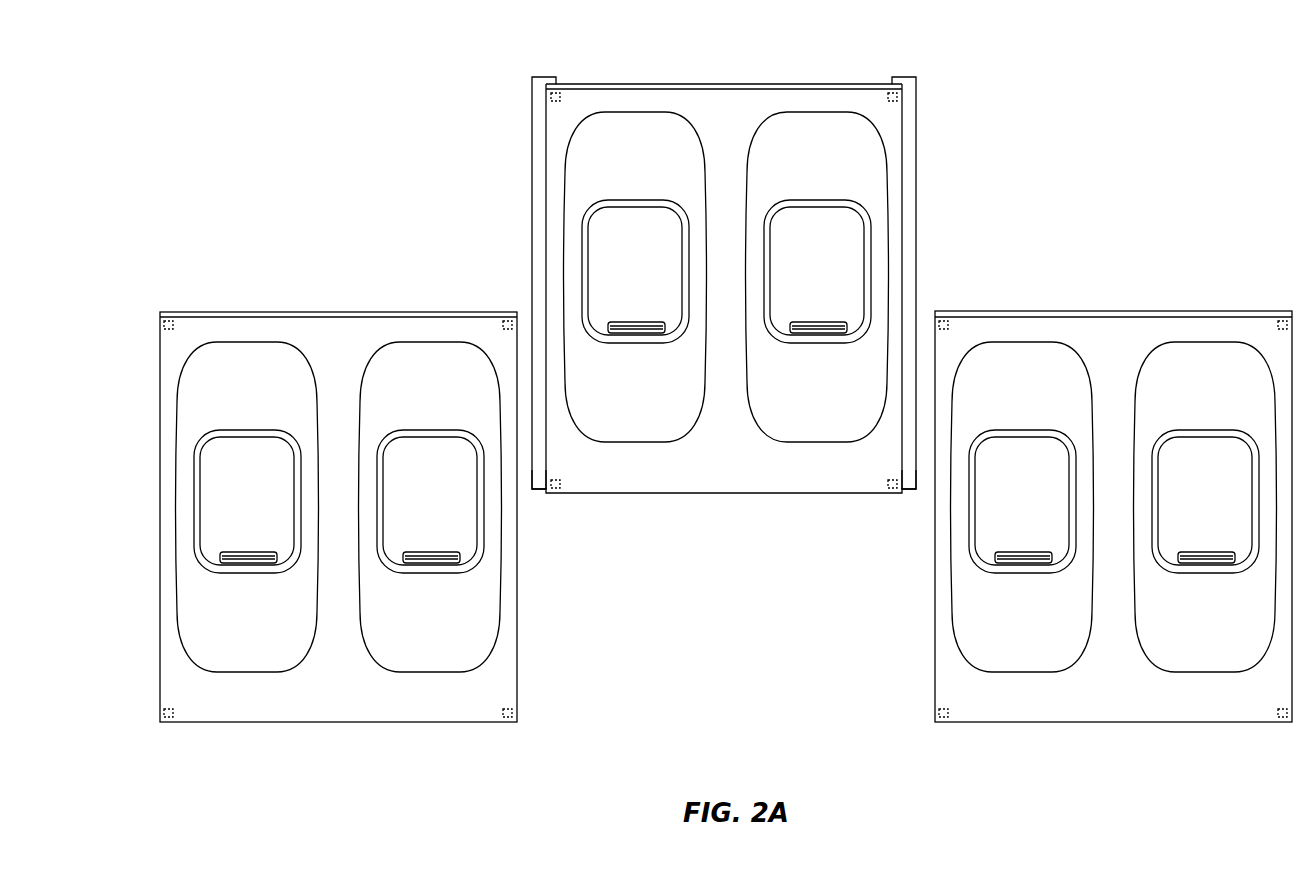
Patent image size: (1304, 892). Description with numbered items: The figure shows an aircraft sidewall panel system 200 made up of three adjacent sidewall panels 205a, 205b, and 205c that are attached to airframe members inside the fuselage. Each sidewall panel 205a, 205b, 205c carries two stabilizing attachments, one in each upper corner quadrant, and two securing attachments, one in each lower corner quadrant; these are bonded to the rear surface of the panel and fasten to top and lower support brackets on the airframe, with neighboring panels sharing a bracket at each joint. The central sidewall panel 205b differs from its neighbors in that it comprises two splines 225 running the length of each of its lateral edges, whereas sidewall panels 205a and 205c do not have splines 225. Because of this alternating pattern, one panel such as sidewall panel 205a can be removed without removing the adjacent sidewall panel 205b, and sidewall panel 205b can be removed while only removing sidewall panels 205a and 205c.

The sidewall panel system 200 is at (1094, 181).
The sidewall panel 205a is at (338, 343).
The sidewall panel 205b is at (726, 105).
The sidewall panel 205c is at (1110, 338).
The spline 225 is at (540, 494).